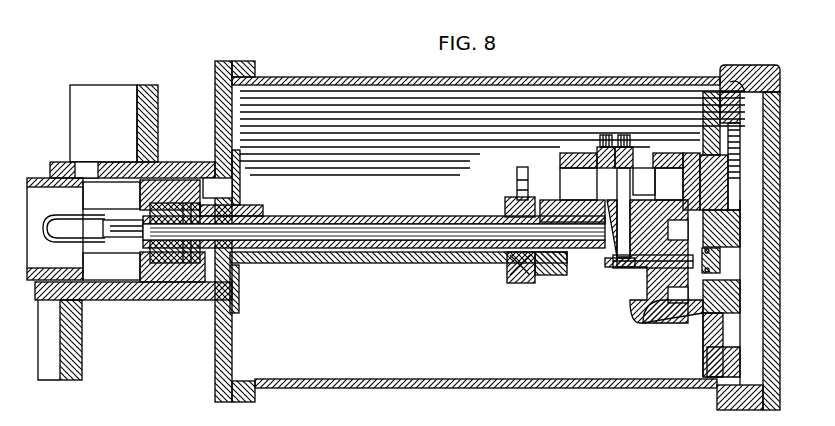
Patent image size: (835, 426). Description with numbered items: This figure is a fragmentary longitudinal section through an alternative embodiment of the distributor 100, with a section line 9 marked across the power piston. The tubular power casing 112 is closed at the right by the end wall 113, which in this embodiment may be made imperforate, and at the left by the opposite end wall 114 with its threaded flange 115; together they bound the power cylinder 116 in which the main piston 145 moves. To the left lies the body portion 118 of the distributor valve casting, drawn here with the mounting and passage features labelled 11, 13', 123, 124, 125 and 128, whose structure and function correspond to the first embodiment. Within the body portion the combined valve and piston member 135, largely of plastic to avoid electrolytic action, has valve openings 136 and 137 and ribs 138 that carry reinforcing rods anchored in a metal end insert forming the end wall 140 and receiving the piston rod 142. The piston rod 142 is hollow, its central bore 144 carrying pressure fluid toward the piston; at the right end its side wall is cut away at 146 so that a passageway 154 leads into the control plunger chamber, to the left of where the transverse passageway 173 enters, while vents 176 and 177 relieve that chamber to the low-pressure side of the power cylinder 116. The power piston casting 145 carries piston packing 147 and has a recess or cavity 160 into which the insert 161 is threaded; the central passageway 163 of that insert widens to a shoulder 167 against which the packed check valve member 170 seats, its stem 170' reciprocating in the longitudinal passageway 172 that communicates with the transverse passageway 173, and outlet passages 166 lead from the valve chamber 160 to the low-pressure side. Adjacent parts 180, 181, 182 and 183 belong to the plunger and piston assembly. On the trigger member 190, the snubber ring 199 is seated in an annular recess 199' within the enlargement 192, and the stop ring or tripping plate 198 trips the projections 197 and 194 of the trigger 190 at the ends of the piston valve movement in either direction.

The distributor 100 is at (330, 64).
The mounting direction 11 is at (142, 309).
The housing end 13' is at (792, 55).
The section line 9 is at (497, 176).
The tubular power casing 112 is at (372, 78).
The end wall 113 is at (776, 165).
The opposite end wall 114 is at (222, 128).
The threaded flange 115 is at (252, 62).
The power cylinder 116 is at (505, 85).
The body portion 118 is at (162, 292).
The mounting block 123 is at (110, 88).
The mounting leg 124 is at (45, 372).
The end plate 125 is at (742, 157).
The recess 128 is at (86, 165).
The combined valve and piston member 135 is at (44, 170).
The valve opening 136 is at (83, 203).
The valve opening 137 is at (83, 262).
The ribs 138 is at (88, 224).
The end wall 140 is at (148, 272).
The piston rod 142 is at (380, 238).
The central bore 144 is at (335, 226).
The main piston 145 is at (698, 97).
The cut-away side wall 146 is at (598, 225).
The piston packing 147 is at (748, 66).
The passageway 154 is at (548, 272).
The recess or cavity 160 is at (742, 212).
The insert 161 is at (705, 232).
The central passageway 163 is at (720, 262).
The outlet passages 166 is at (690, 312).
The shoulder 167 is at (722, 290).
The check valve member 170 is at (759, 265).
The stem 170' is at (625, 341).
The longitudinal passageway 172 is at (628, 268).
The transverse passageway 173 is at (600, 262).
The vent 176 is at (690, 152).
The vent 177 is at (655, 172).
The support block 180 is at (537, 166).
The screw 181 is at (597, 150).
The screw 182 is at (630, 150).
The pin head 183 is at (518, 165).
The trigger member 190 is at (366, 262).
The enlargement 192 is at (500, 200).
The projection 194 is at (518, 285).
The projection 197 is at (232, 290).
The stop ring or tripping plate 198 is at (238, 176).
The snubber ring 199 is at (487, 283).
The annular recess 199' is at (487, 242).